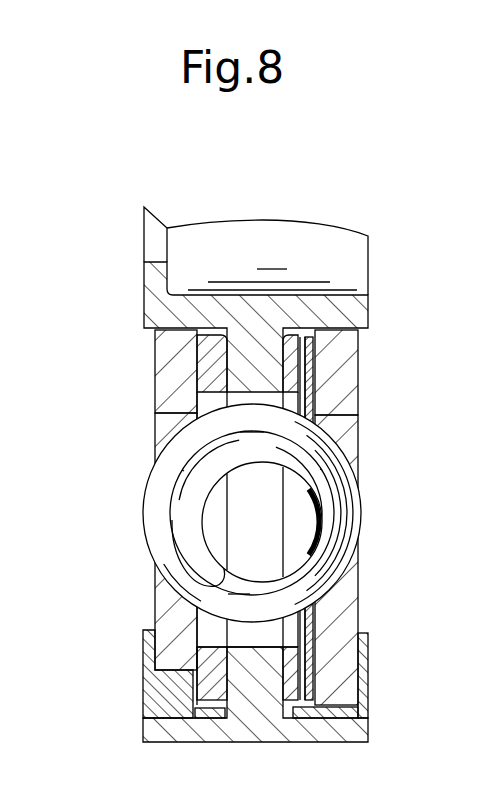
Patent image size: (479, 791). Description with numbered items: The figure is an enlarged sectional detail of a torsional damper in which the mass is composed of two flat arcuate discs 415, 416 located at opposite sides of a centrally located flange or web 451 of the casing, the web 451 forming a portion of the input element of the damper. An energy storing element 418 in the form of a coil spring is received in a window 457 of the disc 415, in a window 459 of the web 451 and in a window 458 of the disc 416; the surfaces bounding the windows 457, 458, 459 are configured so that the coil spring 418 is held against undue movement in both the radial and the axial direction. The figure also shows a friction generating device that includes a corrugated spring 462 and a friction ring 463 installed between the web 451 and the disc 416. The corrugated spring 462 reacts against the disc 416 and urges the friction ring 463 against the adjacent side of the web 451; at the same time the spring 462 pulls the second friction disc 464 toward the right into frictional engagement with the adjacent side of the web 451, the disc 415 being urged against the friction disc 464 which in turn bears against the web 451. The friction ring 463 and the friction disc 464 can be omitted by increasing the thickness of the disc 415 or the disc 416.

The web 451 is at (257, 375).
The disc 415 is at (168, 372).
The window 457 is at (168, 428).
The second friction disc 464 is at (213, 357).
The friction ring 463 is at (308, 355).
The corrugated spring 462 is at (310, 380).
The window 458 is at (343, 433).
The disc 416 is at (332, 620).
The energy storing element 418 is at (172, 523).
The window 459 is at (267, 533).